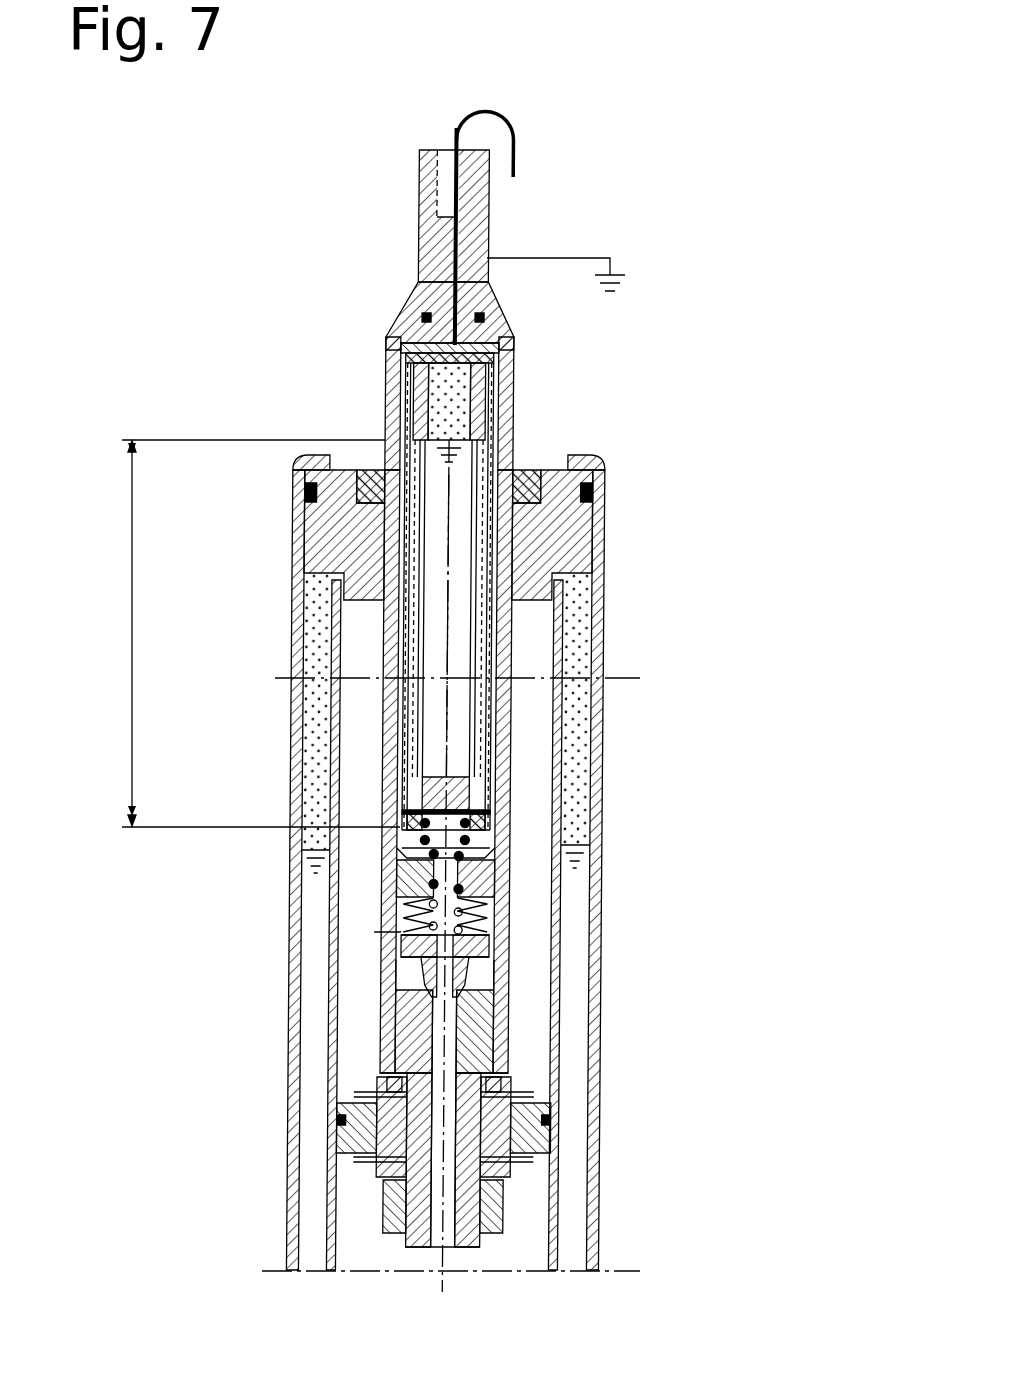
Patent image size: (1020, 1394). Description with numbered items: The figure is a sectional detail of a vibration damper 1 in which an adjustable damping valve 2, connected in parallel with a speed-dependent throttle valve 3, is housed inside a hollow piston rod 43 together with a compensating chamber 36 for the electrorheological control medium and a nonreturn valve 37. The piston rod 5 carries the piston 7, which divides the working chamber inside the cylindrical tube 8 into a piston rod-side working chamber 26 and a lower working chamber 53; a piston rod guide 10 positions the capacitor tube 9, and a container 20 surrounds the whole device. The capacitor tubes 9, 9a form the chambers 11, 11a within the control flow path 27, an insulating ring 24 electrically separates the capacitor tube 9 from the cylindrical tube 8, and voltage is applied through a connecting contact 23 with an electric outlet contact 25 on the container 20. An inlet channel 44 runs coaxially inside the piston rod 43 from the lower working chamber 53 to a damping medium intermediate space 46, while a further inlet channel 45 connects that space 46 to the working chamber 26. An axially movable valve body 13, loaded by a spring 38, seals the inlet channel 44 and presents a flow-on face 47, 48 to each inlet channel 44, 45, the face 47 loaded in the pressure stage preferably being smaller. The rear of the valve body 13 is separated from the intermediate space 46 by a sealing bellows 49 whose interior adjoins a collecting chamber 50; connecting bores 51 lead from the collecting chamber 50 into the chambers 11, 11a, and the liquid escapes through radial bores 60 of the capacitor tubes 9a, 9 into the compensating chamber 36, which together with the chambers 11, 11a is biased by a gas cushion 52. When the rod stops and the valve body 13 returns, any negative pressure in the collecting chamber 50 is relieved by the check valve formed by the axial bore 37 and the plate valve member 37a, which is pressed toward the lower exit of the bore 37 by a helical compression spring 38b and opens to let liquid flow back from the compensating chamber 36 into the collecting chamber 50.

The vibration damper 1 is at (790, 1193).
The damping valve 2 is at (378, 1008).
The speed-dependent throttle valve 3 is at (365, 1170).
The piston rod 5 is at (507, 360).
The piston 7 is at (525, 1087).
The cylindrical tube 8 is at (555, 1170).
The capacitor tube 9 is at (412, 752).
The capacitor tube 9a is at (405, 770).
The piston rod guide 10 is at (528, 470).
The annular chamber 11 is at (490, 725).
The chamber 11a is at (490, 660).
The valve body 13 is at (500, 980).
The container 20 is at (595, 1218).
The connecting contact 23 is at (522, 160).
The insulating ring 24 is at (487, 300).
The electric outlet contact 25 is at (556, 256).
The working chamber 26 is at (365, 633).
The control flow path 27 is at (128, 628).
The compensating chamber 36 is at (490, 638).
The nonreturn valve 37 is at (418, 793).
The plate valve member 37a is at (405, 815).
The spring 38 is at (397, 895).
The helical compression spring 38b is at (398, 838).
The hollow piston rod 43 is at (385, 262).
The inlet channel 44 is at (437, 1063).
The further inlet channel 45 is at (400, 932).
The damping medium intermediate space 46 is at (500, 938).
The flow-on face 47 is at (510, 1030).
The flow-on face 48 is at (398, 972).
The sealing bellows 49 is at (500, 928).
The collecting chamber 50 is at (482, 905).
The connecting bores 51 is at (490, 815).
The gas cushion 52 is at (470, 405).
The working chamber 53 is at (352, 1215).
The radial bores 60 is at (405, 420).